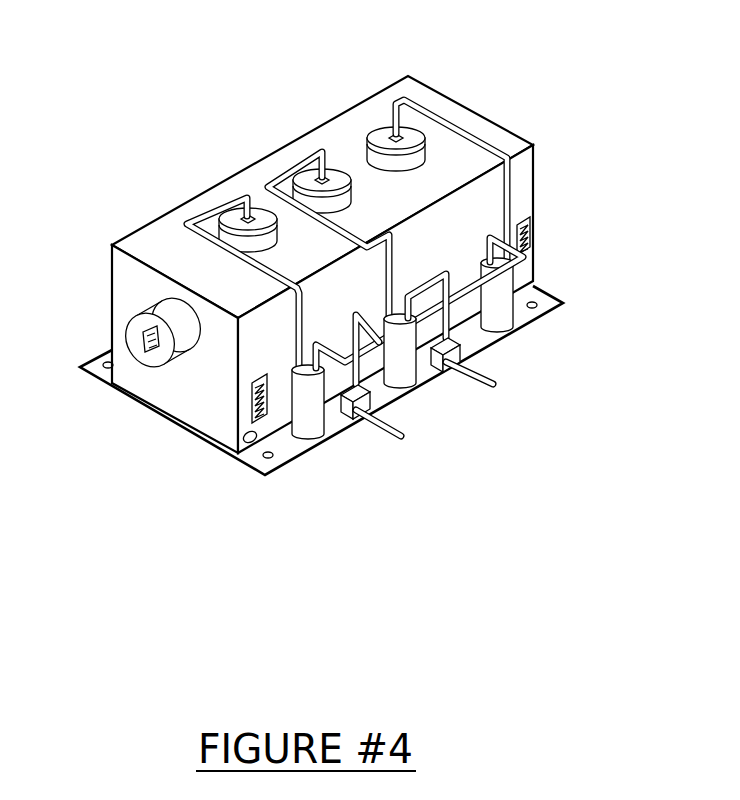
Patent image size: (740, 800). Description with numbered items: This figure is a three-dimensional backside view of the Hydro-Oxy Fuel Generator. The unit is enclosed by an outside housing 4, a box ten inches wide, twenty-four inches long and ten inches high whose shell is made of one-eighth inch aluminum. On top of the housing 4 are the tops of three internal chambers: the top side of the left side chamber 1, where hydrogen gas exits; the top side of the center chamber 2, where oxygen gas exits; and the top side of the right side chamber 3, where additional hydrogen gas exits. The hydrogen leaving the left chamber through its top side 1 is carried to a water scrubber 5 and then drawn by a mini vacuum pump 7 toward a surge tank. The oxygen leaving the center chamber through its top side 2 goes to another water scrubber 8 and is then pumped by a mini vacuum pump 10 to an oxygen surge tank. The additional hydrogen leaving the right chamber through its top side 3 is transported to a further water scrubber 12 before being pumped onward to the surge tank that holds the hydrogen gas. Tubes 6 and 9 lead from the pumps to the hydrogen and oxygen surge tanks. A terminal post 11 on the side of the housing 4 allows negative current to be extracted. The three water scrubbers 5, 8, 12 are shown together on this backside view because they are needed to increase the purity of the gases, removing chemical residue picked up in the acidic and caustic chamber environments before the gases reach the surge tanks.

The top side of the left side chamber 1 is at (391, 99).
The top side of the center chamber 2 is at (341, 140).
The top side of the right side chamber 3 is at (259, 172).
The outside housing 4 is at (161, 216).
The water scrubber 5 is at (552, 271).
The tube 6 is at (514, 357).
The mini vacuum pump 7 is at (466, 385).
The water scrubber 8 is at (443, 405).
The tube 9 is at (380, 460).
The mini vacuum pump 10 is at (348, 458).
The terminal post 11 is at (136, 377).
The water scrubber 12 is at (294, 457).